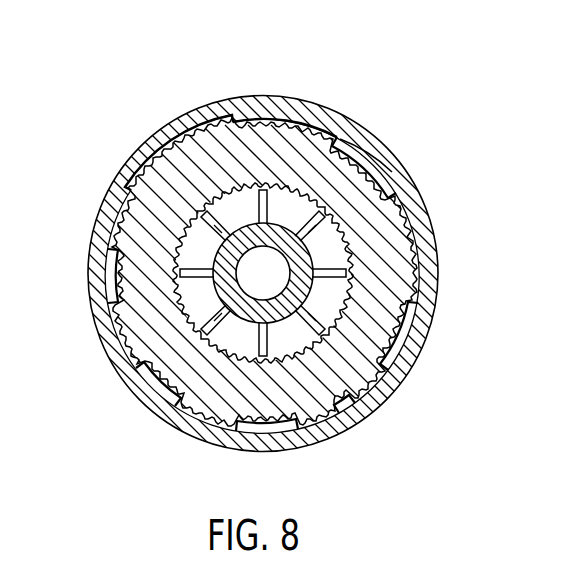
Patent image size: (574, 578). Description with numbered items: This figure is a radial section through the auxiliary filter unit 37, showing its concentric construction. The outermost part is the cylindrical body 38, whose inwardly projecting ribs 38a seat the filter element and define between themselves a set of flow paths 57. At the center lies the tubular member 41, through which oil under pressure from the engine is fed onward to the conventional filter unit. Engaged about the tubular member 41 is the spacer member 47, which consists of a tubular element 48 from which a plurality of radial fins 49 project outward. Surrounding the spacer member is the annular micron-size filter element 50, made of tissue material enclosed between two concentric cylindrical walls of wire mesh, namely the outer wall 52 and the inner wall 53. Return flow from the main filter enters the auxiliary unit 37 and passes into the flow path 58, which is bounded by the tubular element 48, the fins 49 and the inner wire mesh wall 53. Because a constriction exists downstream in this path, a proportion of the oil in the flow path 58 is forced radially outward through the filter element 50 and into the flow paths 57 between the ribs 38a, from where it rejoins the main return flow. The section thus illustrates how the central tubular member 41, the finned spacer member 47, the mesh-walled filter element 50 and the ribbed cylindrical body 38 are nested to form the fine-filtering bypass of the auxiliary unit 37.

The auxiliary filter unit 37 is at (225, 95).
The cylindrical body 38 is at (190, 124).
The ribs 38a is at (290, 120).
The tubular member 41 is at (257, 307).
The spacer member 47 is at (205, 311).
The tubular element 48 is at (342, 273).
The radial fins 49 is at (290, 258).
The annular micron-size filter element 50 is at (163, 151).
The outer cylindrical wall of wire mesh 52 is at (233, 118).
The inner cylindrical wall of wire mesh 53 is at (176, 260).
The flow paths 57 is at (396, 193).
The flow path 58 is at (300, 344).